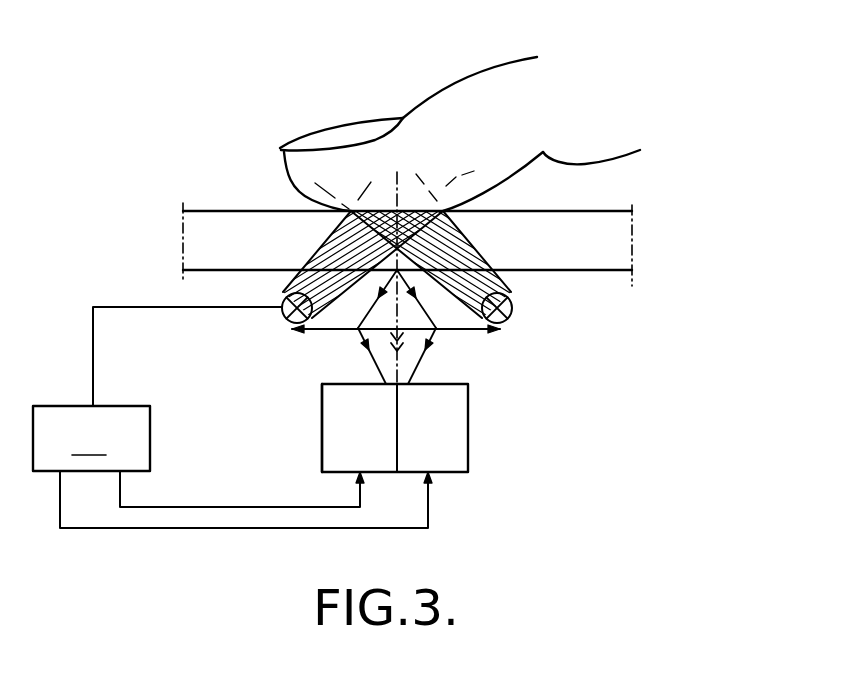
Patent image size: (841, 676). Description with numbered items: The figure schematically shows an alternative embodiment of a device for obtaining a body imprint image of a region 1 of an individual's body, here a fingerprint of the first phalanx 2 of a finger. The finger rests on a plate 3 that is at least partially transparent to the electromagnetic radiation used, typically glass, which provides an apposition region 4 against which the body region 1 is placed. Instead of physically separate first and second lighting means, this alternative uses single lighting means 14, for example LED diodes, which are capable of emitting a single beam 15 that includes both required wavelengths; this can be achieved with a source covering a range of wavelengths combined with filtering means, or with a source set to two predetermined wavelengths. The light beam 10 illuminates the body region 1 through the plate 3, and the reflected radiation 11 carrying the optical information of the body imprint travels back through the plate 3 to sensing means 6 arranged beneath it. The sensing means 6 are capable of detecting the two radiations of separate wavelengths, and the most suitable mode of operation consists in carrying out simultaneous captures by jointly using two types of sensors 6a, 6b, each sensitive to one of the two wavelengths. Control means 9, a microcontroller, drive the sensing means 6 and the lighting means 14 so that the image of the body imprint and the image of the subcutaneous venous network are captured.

The region of an individual's body 1 is at (478, 136).
The first phalanx of a finger 2 is at (378, 188).
The plate 3 is at (570, 242).
The apposition region 4 is at (457, 212).
The sensing means 6 is at (391, 437).
The first type of sensor 6a is at (339, 443).
The second type of sensor 6b is at (438, 455).
The control means 9 is at (232, 417).
The first light beam 10 is at (401, 373).
The reflected radiation 11 is at (410, 356).
The single lighting means 14 is at (282, 312).
The single beam 15 is at (397, 270).